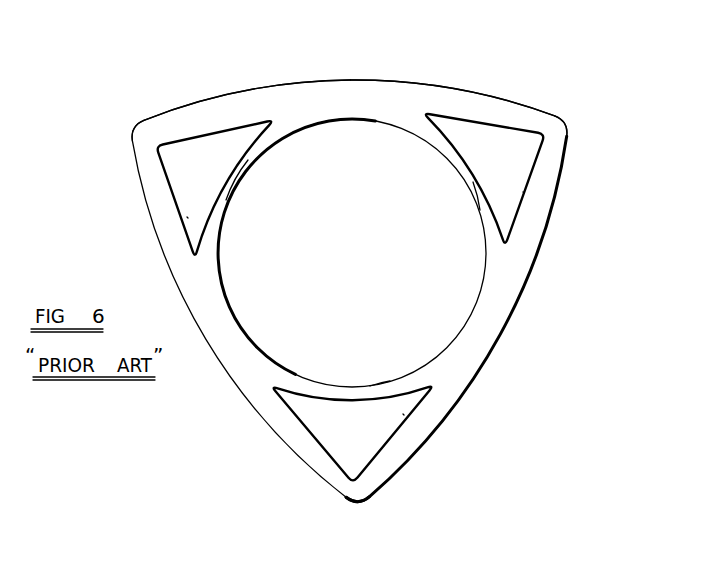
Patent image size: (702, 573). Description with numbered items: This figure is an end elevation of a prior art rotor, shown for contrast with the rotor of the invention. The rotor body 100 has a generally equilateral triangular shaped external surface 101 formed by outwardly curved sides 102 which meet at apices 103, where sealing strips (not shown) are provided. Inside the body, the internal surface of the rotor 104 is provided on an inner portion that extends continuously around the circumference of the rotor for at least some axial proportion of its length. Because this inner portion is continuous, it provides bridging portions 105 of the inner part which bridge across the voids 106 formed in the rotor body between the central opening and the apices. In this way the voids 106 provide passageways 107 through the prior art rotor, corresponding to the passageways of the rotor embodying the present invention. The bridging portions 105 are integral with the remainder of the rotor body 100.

The rotor body 100 is at (299, 78).
The external surface 101 is at (352, 80).
The outwardly curved sides 102 is at (429, 82).
The apices 103 is at (122, 119).
The internal surface of the rotor 104 is at (362, 122).
The bridging portions 105 is at (248, 160).
The voids 106 is at (351, 297).
The passageways 107 is at (187, 217).